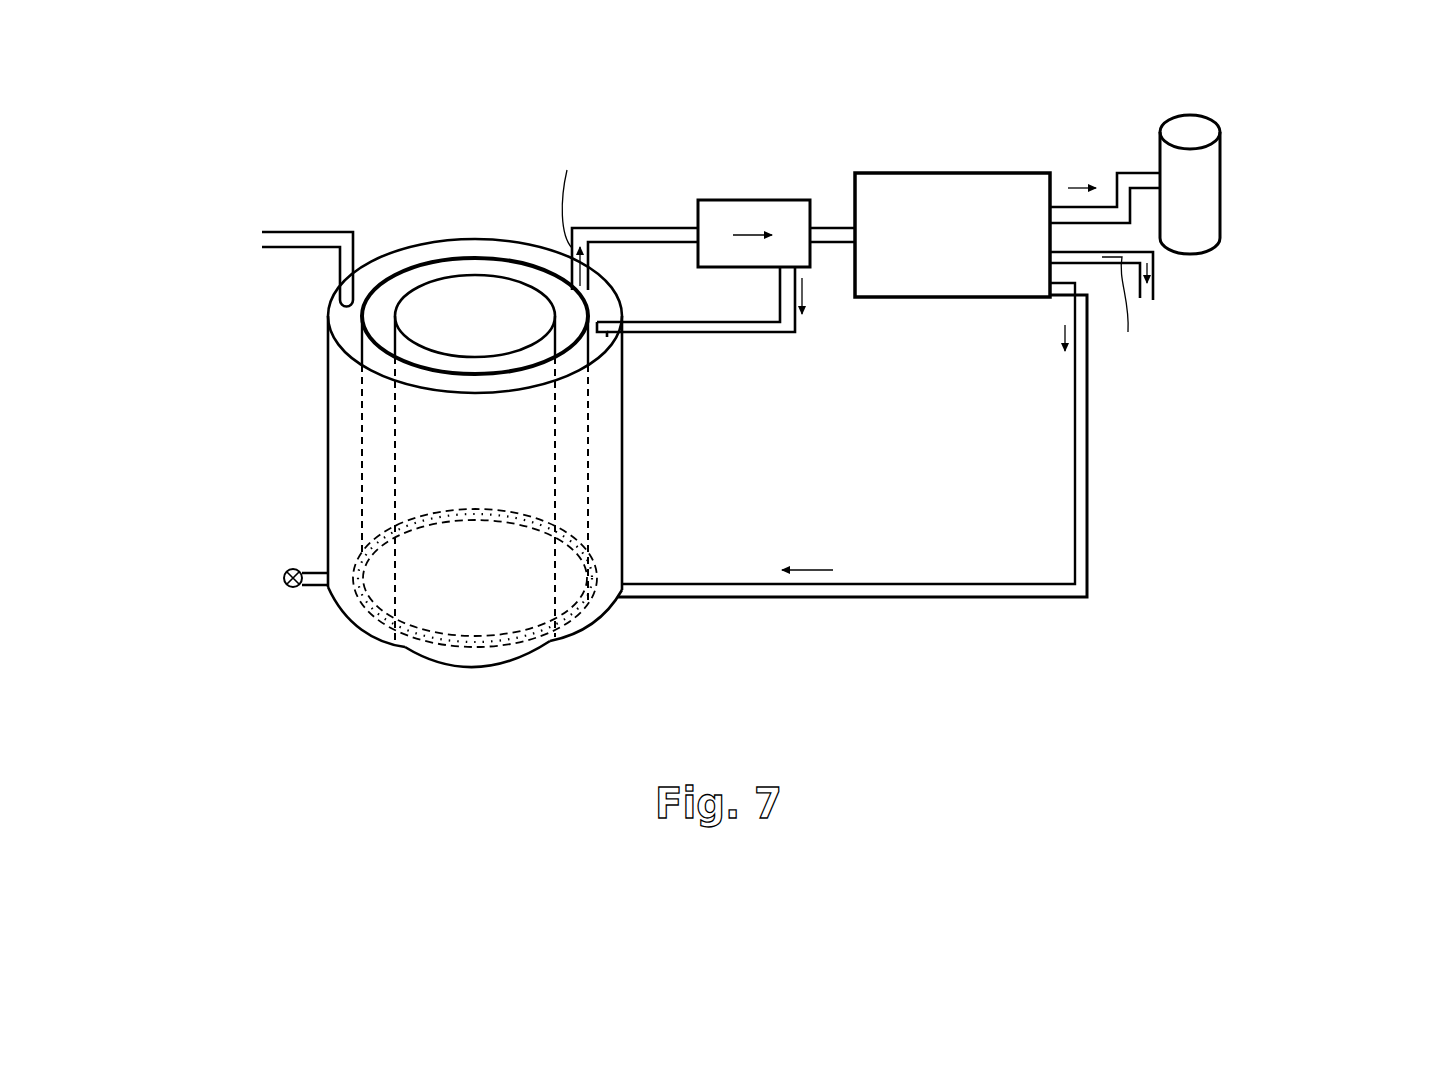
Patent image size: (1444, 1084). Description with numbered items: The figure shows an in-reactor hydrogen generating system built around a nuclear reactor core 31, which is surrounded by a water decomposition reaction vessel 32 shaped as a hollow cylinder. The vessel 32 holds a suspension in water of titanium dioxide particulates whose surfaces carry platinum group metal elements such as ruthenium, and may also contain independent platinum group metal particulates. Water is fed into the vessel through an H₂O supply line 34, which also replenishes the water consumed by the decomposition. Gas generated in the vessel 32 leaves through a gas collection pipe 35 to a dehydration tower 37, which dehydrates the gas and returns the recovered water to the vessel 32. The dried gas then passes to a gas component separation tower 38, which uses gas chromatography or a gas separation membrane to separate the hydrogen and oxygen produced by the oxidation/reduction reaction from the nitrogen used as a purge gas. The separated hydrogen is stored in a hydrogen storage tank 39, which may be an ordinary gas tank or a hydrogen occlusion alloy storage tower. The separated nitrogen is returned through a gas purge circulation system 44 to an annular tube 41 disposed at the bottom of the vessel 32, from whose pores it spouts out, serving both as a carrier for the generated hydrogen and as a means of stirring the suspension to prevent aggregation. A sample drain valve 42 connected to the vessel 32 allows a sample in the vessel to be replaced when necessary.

The reactor core 31 is at (430, 305).
The water decomposition reaction vessel 32 is at (350, 342).
The H₂O supply line 34 is at (284, 232).
The gas collection pipe 35 is at (618, 235).
The dehydration tower 37 is at (698, 251).
The gas component separation tower 38 is at (867, 173).
The hydrogen storage tank 39 is at (1220, 227).
The annular tube 41 is at (593, 622).
The sample drain valve 42 is at (290, 593).
The gas purge circulation system 44 is at (1090, 535).